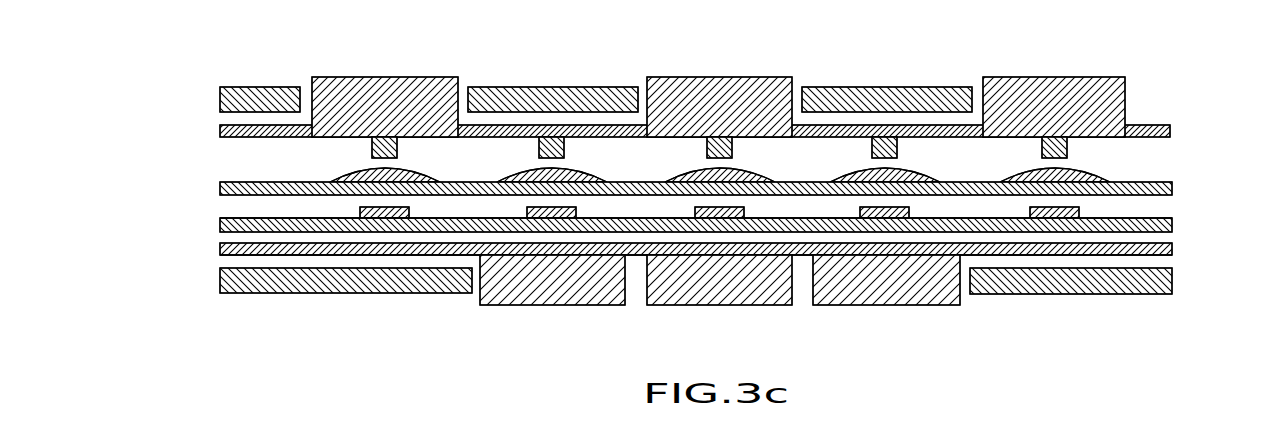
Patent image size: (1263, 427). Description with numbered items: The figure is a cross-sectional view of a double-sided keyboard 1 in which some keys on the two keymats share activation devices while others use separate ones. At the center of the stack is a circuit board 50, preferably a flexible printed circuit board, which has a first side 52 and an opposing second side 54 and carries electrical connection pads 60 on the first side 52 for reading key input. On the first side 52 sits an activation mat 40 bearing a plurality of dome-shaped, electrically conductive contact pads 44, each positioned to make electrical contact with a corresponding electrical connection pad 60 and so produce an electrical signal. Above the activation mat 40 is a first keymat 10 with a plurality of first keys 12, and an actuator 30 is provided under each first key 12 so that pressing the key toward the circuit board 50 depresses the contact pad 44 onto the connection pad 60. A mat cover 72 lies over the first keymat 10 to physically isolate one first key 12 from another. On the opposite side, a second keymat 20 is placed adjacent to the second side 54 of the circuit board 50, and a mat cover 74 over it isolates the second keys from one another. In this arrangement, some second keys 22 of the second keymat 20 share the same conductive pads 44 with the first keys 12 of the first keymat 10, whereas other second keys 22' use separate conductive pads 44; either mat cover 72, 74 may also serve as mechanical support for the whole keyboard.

The double-sided keyboard 1 is at (678, 192).
The first keymat 10 is at (1158, 125).
The first key 12 is at (372, 77).
The second keymat 20 is at (1171, 250).
The second key 22 is at (719, 300).
The second key 22' is at (720, 300).
The actuator 30 is at (372, 150).
The activation mat 40 is at (1158, 182).
The dome-shaped electrically conductive contact pad 44 is at (430, 172).
The circuit board 50 is at (1171, 219).
The first side 52 is at (228, 219).
The second side 54 is at (230, 256).
The electrical connection pad 60 is at (573, 212).
The mat cover 72 is at (554, 86).
The mat cover 74 is at (305, 293).